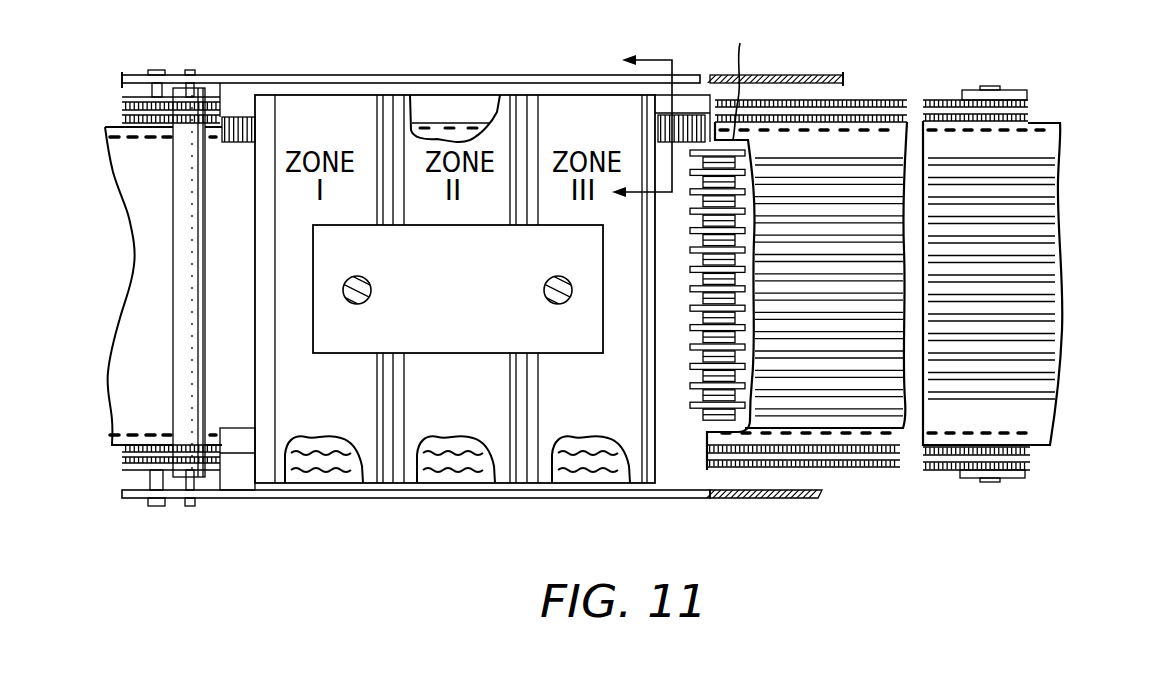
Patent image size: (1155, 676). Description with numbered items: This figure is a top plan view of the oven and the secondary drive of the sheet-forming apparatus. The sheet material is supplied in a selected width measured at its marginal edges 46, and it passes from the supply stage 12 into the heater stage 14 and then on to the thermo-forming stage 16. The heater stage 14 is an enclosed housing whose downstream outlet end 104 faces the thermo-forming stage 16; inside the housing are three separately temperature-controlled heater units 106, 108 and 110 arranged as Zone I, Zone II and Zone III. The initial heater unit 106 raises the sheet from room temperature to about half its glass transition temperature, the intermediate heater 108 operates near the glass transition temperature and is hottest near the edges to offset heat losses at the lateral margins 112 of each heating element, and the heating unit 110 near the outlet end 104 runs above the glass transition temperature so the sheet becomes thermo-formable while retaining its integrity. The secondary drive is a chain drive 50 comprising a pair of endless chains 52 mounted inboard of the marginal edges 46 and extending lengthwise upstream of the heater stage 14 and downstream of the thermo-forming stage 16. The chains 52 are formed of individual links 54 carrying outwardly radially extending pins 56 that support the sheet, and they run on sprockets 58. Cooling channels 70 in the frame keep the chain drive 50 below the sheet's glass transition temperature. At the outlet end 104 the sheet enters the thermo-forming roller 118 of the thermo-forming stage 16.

The supply stage 12 is at (639, 124).
The heater stage 14 is at (92, 110).
The thermo-forming stage 16 is at (808, 55).
The marginal edges 46 is at (335, 75).
The chain drive 50 is at (860, 458).
The endless chains 52 is at (828, 440).
The links 54 is at (895, 105).
The pins 56 is at (1062, 422).
The sprockets 58 is at (1015, 480).
The cooling channels 70 is at (702, 482).
The outlet end 104 is at (665, 322).
The heater unit 106 is at (316, 440).
The intermediate heater 108 is at (448, 440).
The heating unit 110 is at (578, 440).
The lateral margins 112 is at (455, 118).
The thermo-forming roller 118 is at (741, 76).